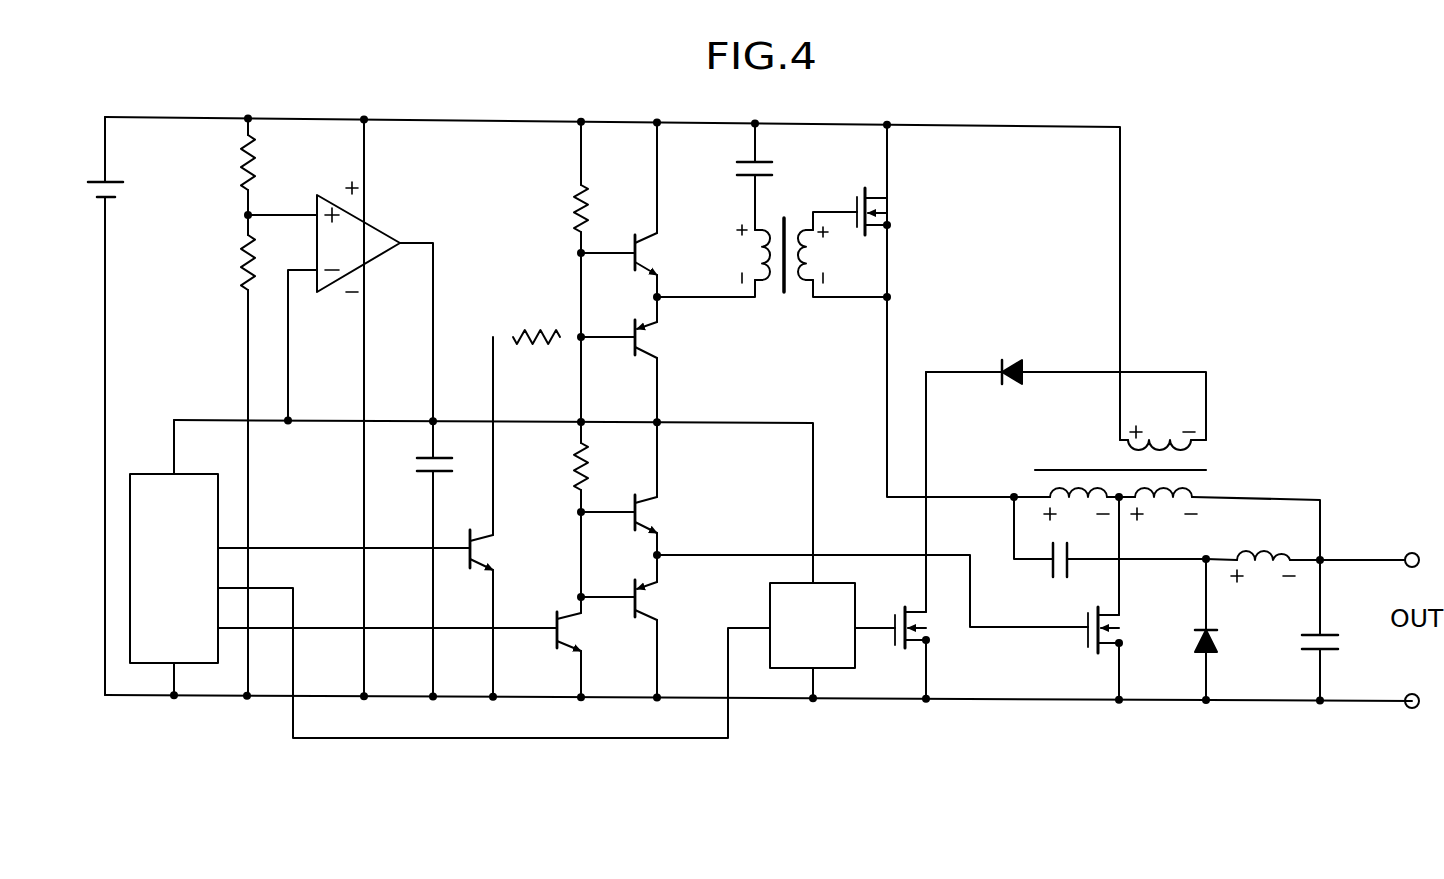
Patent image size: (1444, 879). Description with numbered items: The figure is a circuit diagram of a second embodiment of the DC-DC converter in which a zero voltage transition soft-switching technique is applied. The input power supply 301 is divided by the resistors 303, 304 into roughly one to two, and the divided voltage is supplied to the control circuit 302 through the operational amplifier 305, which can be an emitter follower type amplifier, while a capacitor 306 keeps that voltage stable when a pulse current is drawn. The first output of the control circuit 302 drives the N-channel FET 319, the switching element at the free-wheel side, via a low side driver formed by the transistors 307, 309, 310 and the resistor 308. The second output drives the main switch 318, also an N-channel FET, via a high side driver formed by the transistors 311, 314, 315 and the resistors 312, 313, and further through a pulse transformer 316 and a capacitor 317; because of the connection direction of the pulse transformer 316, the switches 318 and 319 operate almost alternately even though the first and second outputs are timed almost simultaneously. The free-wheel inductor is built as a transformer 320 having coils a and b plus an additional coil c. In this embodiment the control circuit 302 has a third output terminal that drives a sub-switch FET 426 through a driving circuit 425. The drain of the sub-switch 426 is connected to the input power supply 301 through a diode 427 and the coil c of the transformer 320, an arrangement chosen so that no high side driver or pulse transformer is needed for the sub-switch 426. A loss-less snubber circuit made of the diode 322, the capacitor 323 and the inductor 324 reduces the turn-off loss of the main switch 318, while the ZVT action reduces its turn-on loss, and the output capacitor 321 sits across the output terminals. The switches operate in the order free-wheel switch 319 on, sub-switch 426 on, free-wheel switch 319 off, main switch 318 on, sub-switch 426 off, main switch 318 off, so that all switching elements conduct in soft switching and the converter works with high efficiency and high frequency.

The input power supply 301 is at (125, 186).
The control circuit 302 is at (153, 474).
The resistor 303 is at (241, 163).
The resistor 304 is at (241, 264).
The operational amplifier 305 is at (378, 227).
The capacitor 306 is at (422, 476).
The transistor 307 is at (575, 630).
The resistor 308 is at (575, 475).
The transistor 309 is at (658, 595).
The transistor 310 is at (658, 514).
The transistor 311 is at (500, 550).
The resistor 312 is at (538, 330).
The resistor 313 is at (575, 215).
The transistor 314 is at (658, 338).
The transistor 315 is at (660, 253).
The pulse transformer 316 is at (785, 300).
The capacitor 317 is at (738, 167).
The main switch 318 is at (858, 188).
The free-wheel switch 319 is at (1092, 652).
The transformer 320 is at (1100, 461).
The output capacitor 321 is at (1340, 642).
The diode 322 is at (1200, 628).
The capacitor 323 is at (1059, 578).
The inductor 324 is at (1268, 555).
The driving circuit 425 is at (857, 598).
The sub-switch 426 is at (930, 632).
The diode 427 is at (1020, 360).